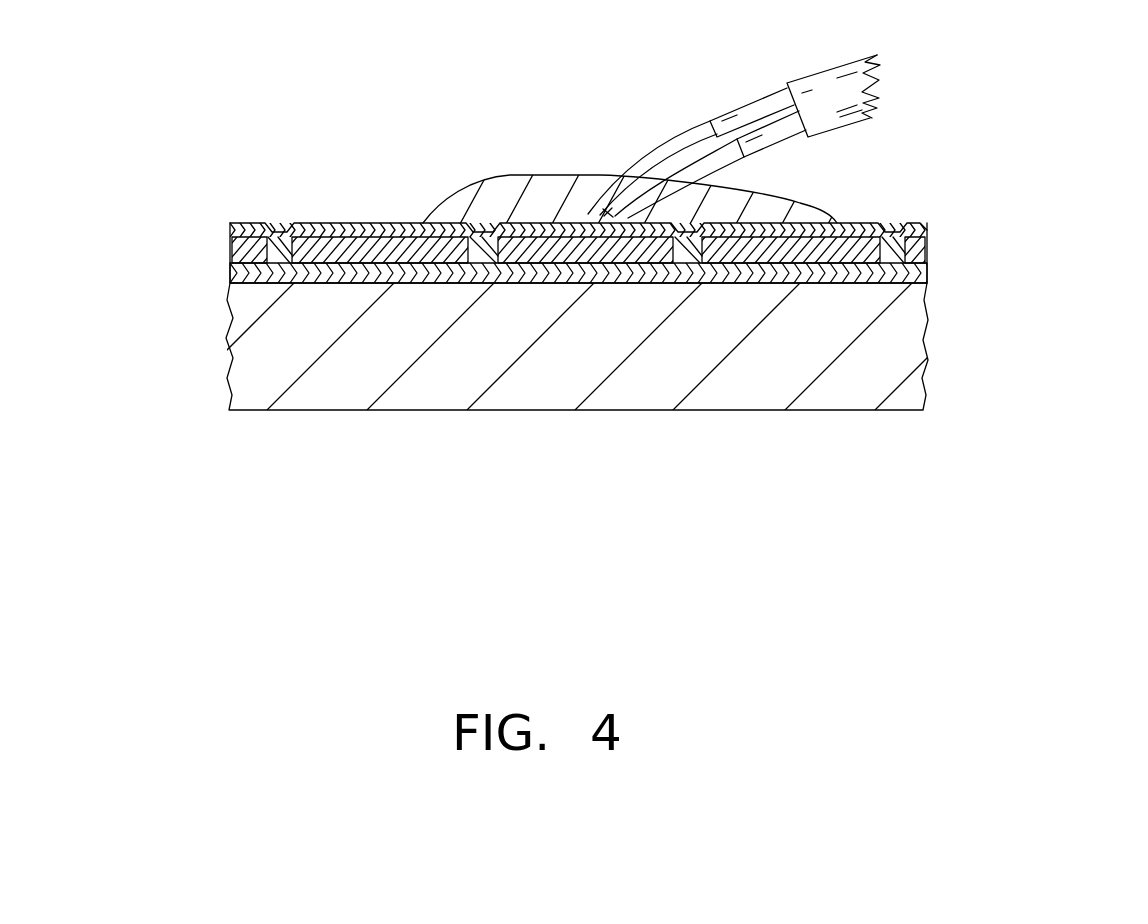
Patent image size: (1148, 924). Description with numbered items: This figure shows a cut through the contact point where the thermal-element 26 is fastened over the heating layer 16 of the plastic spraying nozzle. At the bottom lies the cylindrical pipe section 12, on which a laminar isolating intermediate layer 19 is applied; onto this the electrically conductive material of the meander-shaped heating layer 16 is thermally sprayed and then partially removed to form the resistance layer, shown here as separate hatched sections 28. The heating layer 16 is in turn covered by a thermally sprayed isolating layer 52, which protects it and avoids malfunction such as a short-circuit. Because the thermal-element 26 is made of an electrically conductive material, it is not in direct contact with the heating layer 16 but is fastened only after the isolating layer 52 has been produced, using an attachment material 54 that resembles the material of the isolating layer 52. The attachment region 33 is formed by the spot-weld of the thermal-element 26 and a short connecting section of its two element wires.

The pipe section 12 is at (355, 385).
The heating layer 16 is at (509, 280).
The isolating intermediate layer 19 is at (540, 271).
The thermal-element 26 is at (646, 146).
The conductive electrode layer 28 is at (315, 238).
The attachment region 33 is at (607, 213).
The isolating layer 52 is at (370, 225).
The attachment material 54 is at (500, 200).